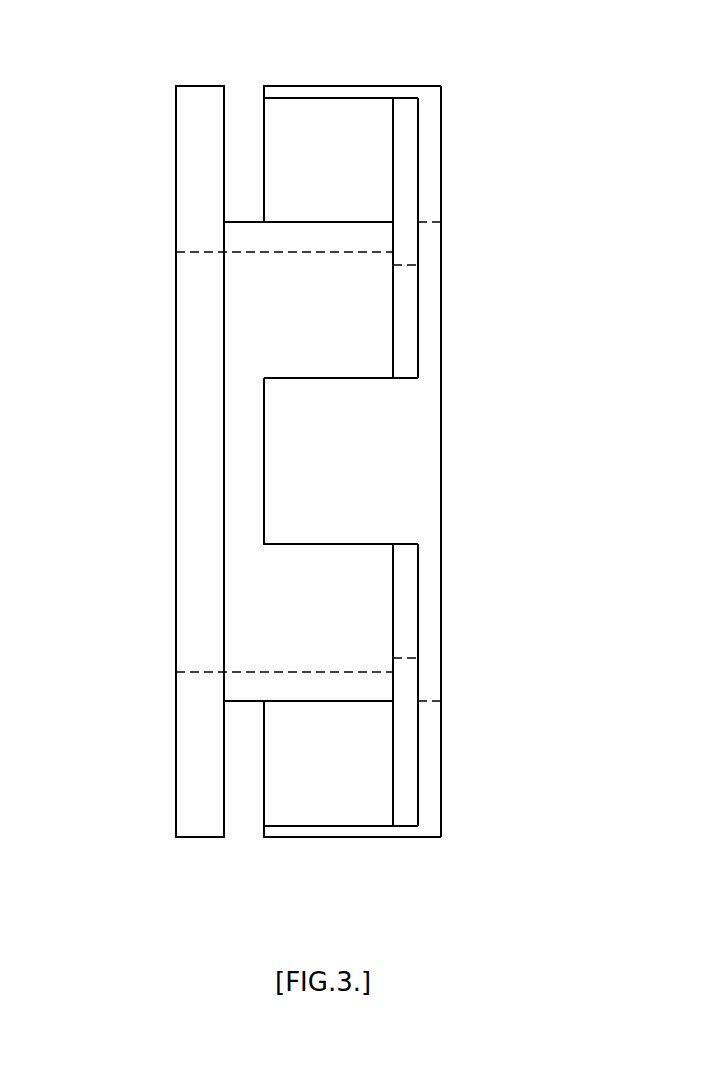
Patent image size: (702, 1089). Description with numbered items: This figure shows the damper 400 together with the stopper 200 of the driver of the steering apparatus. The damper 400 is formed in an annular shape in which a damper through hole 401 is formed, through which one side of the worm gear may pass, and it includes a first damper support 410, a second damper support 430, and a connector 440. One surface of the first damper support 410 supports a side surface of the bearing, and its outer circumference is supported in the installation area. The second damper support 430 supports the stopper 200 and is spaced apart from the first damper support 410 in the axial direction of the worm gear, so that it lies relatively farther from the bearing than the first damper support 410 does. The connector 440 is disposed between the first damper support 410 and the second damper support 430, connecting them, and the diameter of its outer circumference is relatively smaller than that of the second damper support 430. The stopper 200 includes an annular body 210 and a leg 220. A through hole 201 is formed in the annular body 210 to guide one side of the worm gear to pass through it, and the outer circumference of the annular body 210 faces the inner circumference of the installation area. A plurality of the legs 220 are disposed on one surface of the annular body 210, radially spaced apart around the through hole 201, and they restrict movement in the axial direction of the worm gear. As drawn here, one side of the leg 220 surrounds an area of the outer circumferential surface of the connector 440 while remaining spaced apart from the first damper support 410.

The stopper 200 is at (414, 460).
The through hole 201 is at (432, 282).
The annular body 210 is at (432, 188).
The leg 220 is at (313, 128).
The damper 400 is at (222, 461).
The damper through hole 401 is at (260, 619).
The first damper support 410 is at (195, 163).
The second damper support 430 is at (405, 338).
The connector 440 is at (246, 287).